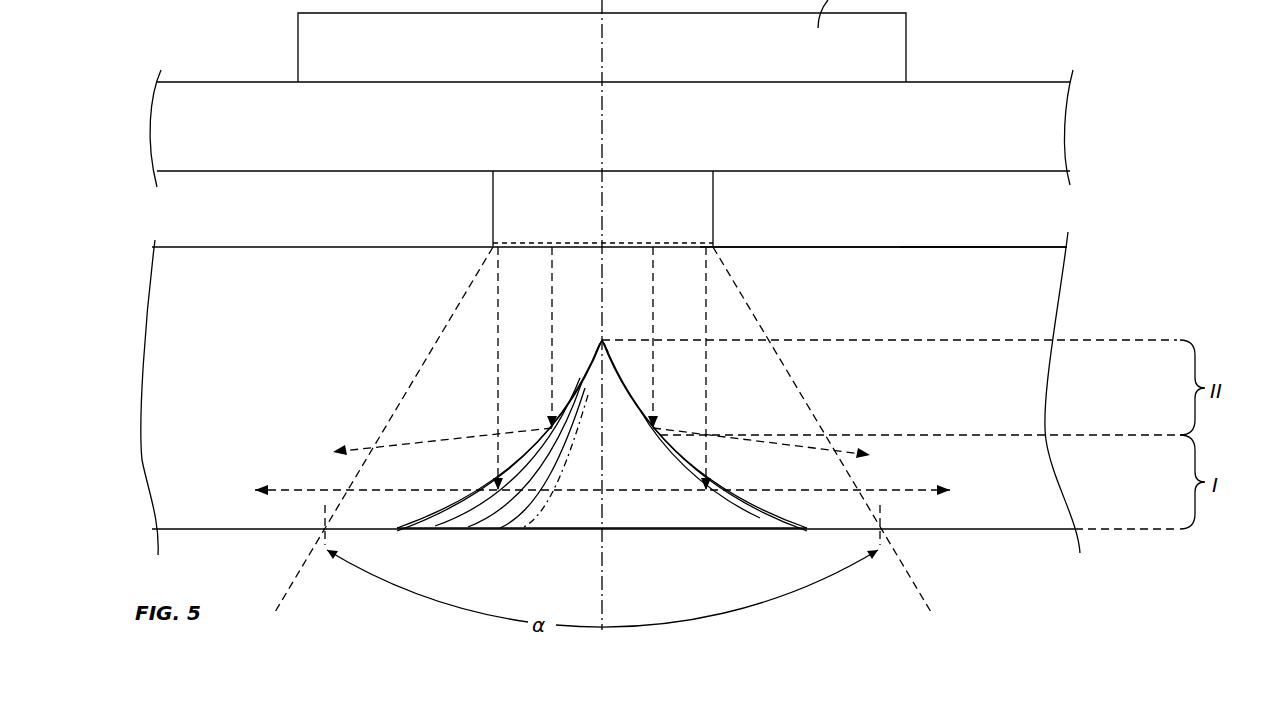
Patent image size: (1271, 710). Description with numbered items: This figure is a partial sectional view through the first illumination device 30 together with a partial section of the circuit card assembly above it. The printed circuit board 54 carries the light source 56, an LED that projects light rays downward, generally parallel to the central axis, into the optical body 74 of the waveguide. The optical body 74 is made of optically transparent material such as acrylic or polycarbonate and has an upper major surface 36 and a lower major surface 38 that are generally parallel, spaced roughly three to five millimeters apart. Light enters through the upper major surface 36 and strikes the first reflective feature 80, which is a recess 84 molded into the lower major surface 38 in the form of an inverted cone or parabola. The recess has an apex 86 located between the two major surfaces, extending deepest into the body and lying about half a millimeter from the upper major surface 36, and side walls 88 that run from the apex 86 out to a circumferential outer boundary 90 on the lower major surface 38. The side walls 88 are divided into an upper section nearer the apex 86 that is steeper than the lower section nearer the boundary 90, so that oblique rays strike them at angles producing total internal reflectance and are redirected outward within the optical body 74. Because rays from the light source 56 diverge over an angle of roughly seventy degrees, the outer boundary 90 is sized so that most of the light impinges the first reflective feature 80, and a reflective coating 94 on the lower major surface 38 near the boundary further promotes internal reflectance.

The first illumination device 30 is at (1010, 243).
The upper major surface 36 is at (1040, 246).
The lower major surface 38 is at (1000, 530).
The printed circuit board 54 is at (976, 98).
The light source 56 is at (713, 195).
The optical body 74 is at (963, 262).
The first reflective feature 80 is at (440, 512).
The recess 84 is at (676, 477).
The apex 86 is at (600, 338).
The side walls 88 is at (648, 418).
The circumferential outer boundary 90 is at (399, 530).
The reflective coating 94 is at (660, 438).